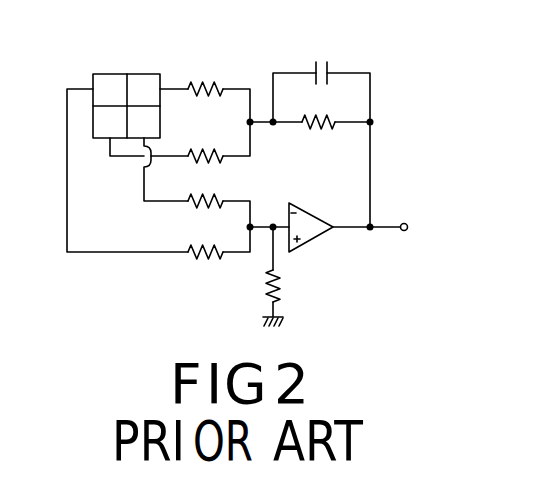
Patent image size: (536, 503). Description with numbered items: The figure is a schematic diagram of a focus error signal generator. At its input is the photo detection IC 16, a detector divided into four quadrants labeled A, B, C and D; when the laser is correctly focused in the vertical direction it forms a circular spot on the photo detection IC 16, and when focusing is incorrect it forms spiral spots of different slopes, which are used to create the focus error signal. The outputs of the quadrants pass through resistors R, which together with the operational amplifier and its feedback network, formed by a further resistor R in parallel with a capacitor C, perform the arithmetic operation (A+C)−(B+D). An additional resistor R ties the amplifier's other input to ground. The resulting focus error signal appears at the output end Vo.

The photo detection IC 16 is at (120, 74).
The resistor R is at (261, 178).
The capacitor C is at (318, 58).
The output end Vo is at (418, 227).